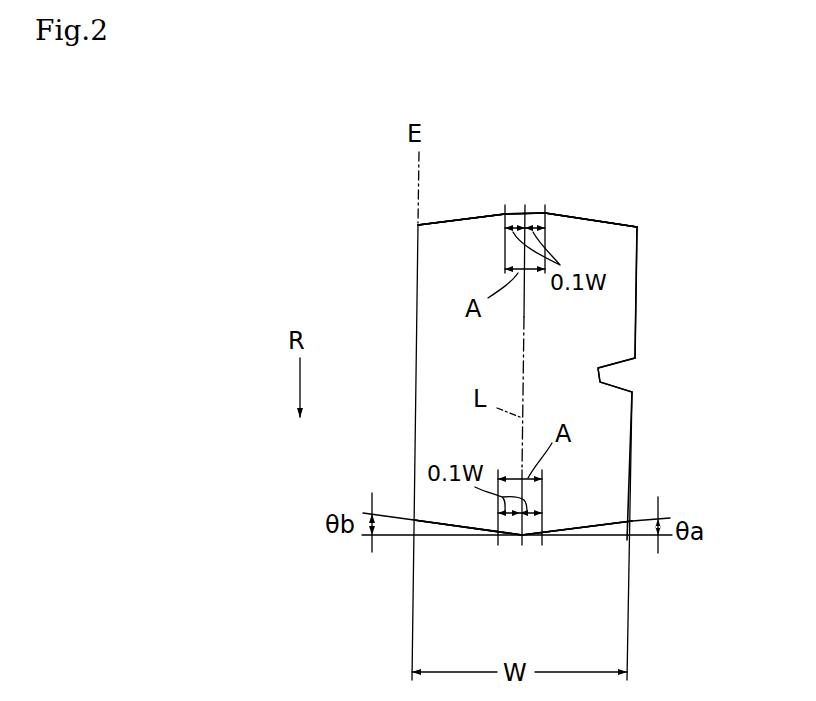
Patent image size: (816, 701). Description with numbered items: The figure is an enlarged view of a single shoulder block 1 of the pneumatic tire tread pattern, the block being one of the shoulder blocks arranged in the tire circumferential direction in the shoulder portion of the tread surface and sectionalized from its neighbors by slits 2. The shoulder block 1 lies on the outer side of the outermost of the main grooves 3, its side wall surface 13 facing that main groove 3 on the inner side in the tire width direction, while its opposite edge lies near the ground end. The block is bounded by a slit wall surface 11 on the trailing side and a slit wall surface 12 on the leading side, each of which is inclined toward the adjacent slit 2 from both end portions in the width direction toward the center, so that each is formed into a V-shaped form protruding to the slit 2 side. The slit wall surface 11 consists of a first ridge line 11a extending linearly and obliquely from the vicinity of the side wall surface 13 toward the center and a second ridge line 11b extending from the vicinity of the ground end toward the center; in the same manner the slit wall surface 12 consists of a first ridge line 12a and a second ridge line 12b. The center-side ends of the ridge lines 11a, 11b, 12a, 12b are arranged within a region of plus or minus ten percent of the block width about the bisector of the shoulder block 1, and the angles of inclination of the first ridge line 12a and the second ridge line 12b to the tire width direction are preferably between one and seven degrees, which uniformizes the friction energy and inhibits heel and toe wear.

The shoulder block 1 is at (430, 338).
The slit 2 is at (460, 183).
The main groove 3 is at (680, 425).
The slit wall surface in the trailing side 11 is at (600, 131).
The first ridge line 11a is at (575, 215).
The second ridge line 11b is at (485, 213).
The slit wall surface in the leading side 12 is at (575, 586).
The first ridge line 12a is at (566, 541).
The second ridge line 12b is at (475, 535).
The side wall surface 13 is at (637, 313).